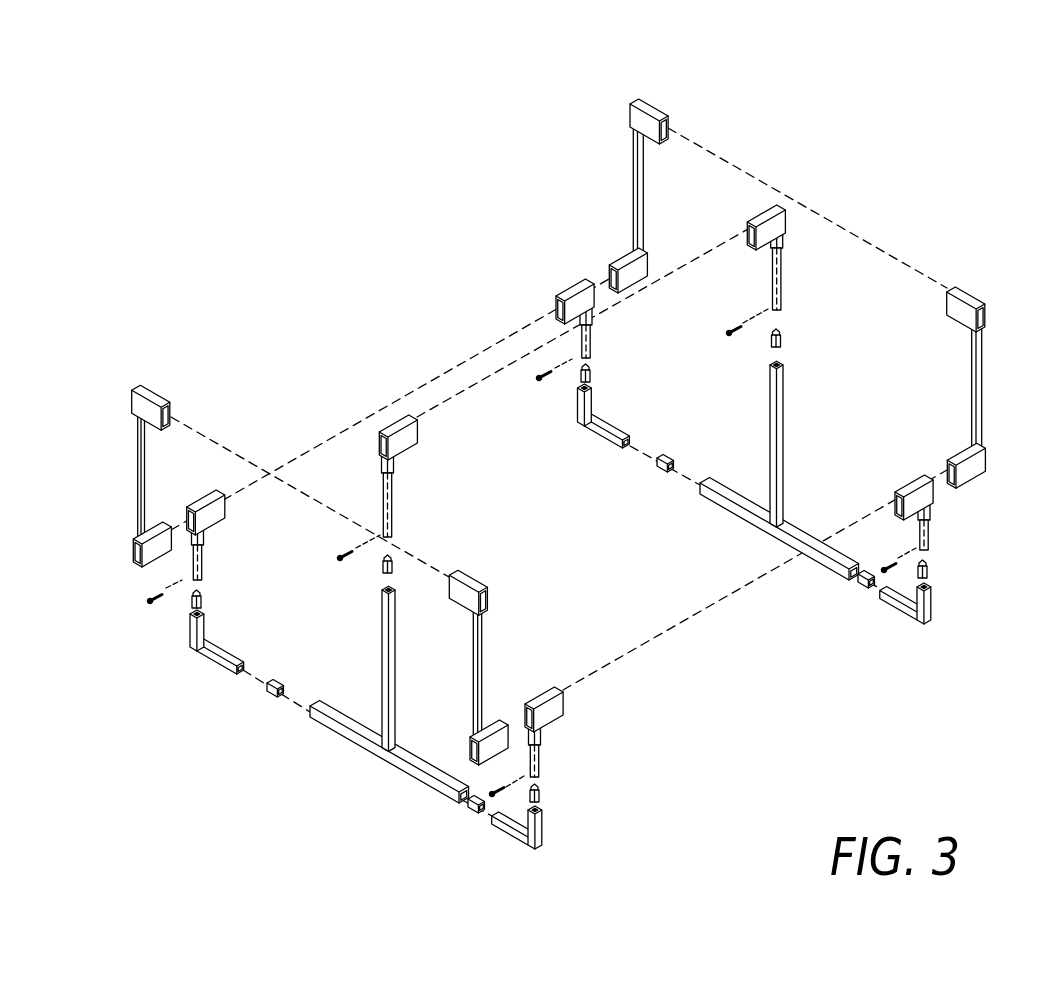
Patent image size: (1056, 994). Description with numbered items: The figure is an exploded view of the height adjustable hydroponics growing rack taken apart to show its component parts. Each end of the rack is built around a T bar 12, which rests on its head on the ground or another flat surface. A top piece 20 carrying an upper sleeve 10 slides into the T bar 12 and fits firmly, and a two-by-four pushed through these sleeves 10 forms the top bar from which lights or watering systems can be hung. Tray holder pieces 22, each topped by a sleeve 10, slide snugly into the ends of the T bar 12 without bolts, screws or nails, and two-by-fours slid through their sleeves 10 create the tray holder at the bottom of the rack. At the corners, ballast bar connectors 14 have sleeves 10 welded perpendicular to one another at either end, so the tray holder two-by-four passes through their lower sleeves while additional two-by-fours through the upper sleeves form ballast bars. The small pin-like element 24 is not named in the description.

The sleeve 10 is at (655, 100).
The T bar 12 is at (380, 690).
The ballast bar connector 14 is at (632, 204).
The top piece 20 is at (383, 493).
The tray holder piece 22 is at (541, 744).
The pin 24 is at (783, 340).